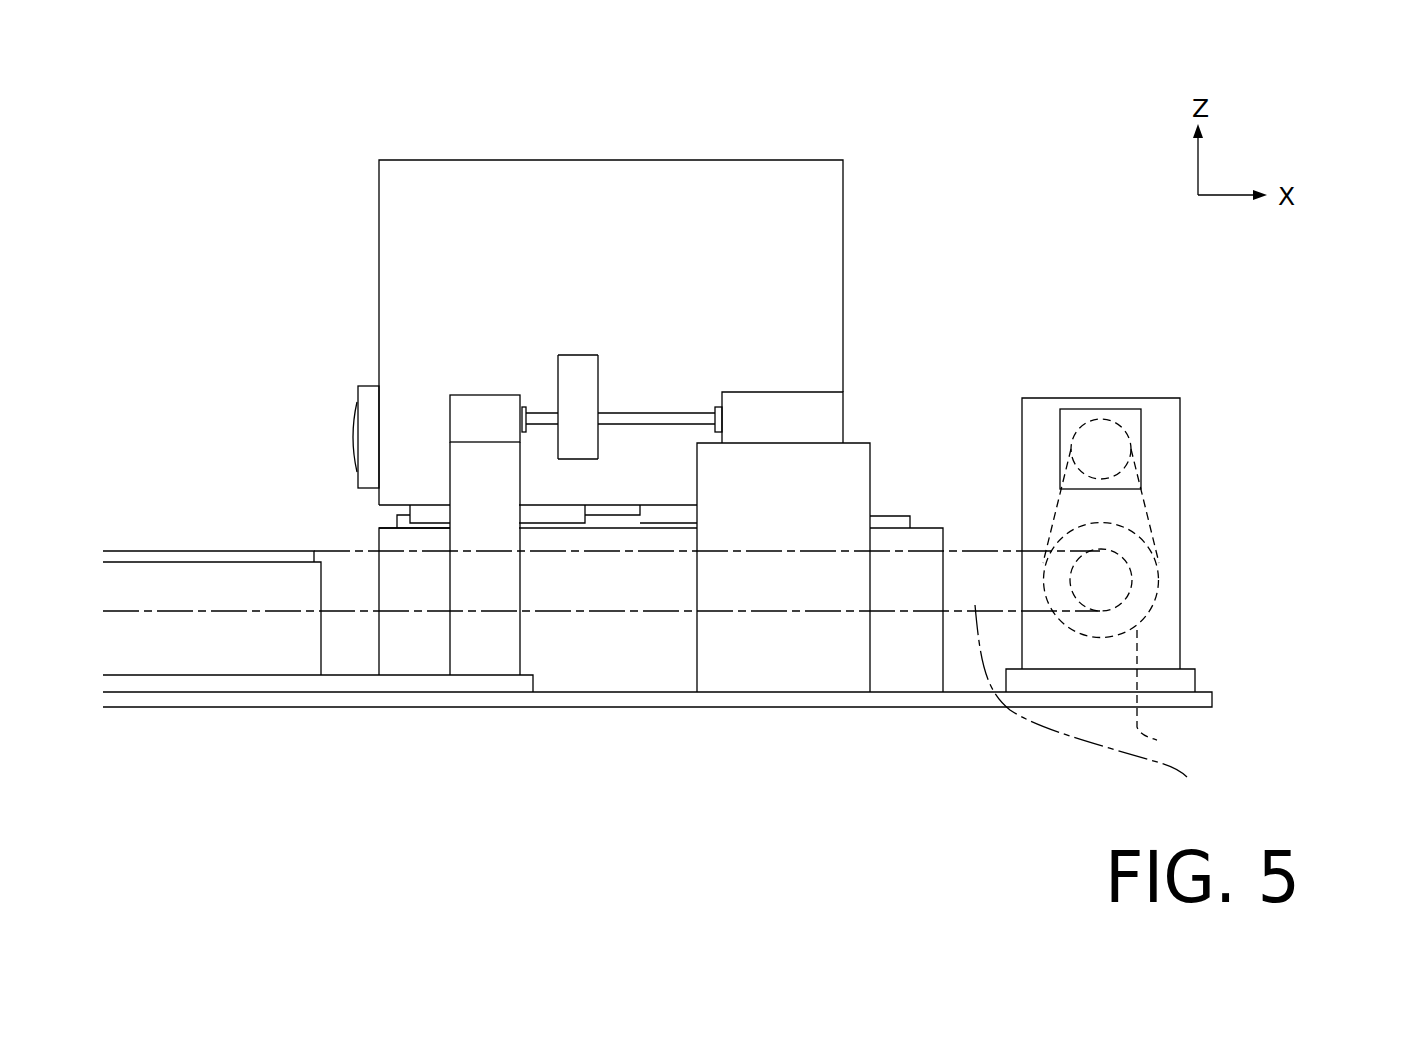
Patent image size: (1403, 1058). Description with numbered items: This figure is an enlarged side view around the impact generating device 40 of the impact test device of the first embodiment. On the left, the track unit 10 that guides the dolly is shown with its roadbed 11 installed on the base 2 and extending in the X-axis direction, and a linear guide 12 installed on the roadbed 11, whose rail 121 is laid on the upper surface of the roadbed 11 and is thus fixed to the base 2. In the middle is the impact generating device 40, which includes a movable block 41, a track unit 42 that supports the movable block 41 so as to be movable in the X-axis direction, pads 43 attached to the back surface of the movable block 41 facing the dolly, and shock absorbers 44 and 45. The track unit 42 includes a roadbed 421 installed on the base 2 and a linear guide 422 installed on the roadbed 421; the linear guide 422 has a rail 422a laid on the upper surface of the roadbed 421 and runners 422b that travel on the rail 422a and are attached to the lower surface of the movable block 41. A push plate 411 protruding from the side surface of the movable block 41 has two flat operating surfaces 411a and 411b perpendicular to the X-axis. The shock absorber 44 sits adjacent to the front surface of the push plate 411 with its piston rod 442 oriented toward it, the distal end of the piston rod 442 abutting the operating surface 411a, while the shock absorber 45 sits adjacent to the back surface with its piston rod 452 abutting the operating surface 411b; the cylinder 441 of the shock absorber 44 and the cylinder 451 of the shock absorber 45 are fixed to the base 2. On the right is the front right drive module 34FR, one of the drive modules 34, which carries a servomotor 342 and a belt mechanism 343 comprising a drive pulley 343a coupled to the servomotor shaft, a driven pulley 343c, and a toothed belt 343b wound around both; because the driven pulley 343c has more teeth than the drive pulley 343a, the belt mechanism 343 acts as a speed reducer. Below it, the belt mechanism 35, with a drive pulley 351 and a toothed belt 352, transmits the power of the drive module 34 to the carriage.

The base 2 is at (967, 700).
The track unit 10 is at (247, 395).
The roadbed 11 is at (245, 567).
The linear guide 12 is at (208, 481).
The rail 121 is at (145, 555).
The drive module 34 is at (1342, 363).
The drive module 34FR is at (1168, 383).
The servomotor 342 is at (1141, 425).
The belt mechanism 343 is at (1272, 443).
The drive pulley 343a is at (1132, 432).
The toothed belt 343b is at (1147, 508).
The driven pulley 343c is at (1167, 587).
The belt mechanism 35 is at (1198, 718).
The drive pulley 351 is at (1171, 694).
The toothed belt 352 is at (1090, 708).
The impact generating device 40 is at (873, 148).
The movable block 41 is at (827, 210).
The push plate 411 is at (577, 355).
The operating surface 411a is at (600, 365).
The operating surface 411b is at (541, 410).
The track unit 42 is at (752, 753).
The roadbed 421 is at (665, 680).
The linear guide 422 is at (680, 783).
The rail 422a is at (599, 523).
The runner 422b is at (548, 513).
The pad 43 is at (360, 392).
The shock absorber 44 is at (777, 257).
The cylinder 441 is at (795, 398).
The piston rod 442 is at (664, 410).
The shock absorber 45 is at (322, 220).
The cylinder 451 is at (488, 400).
The piston rod 452 is at (540, 412).